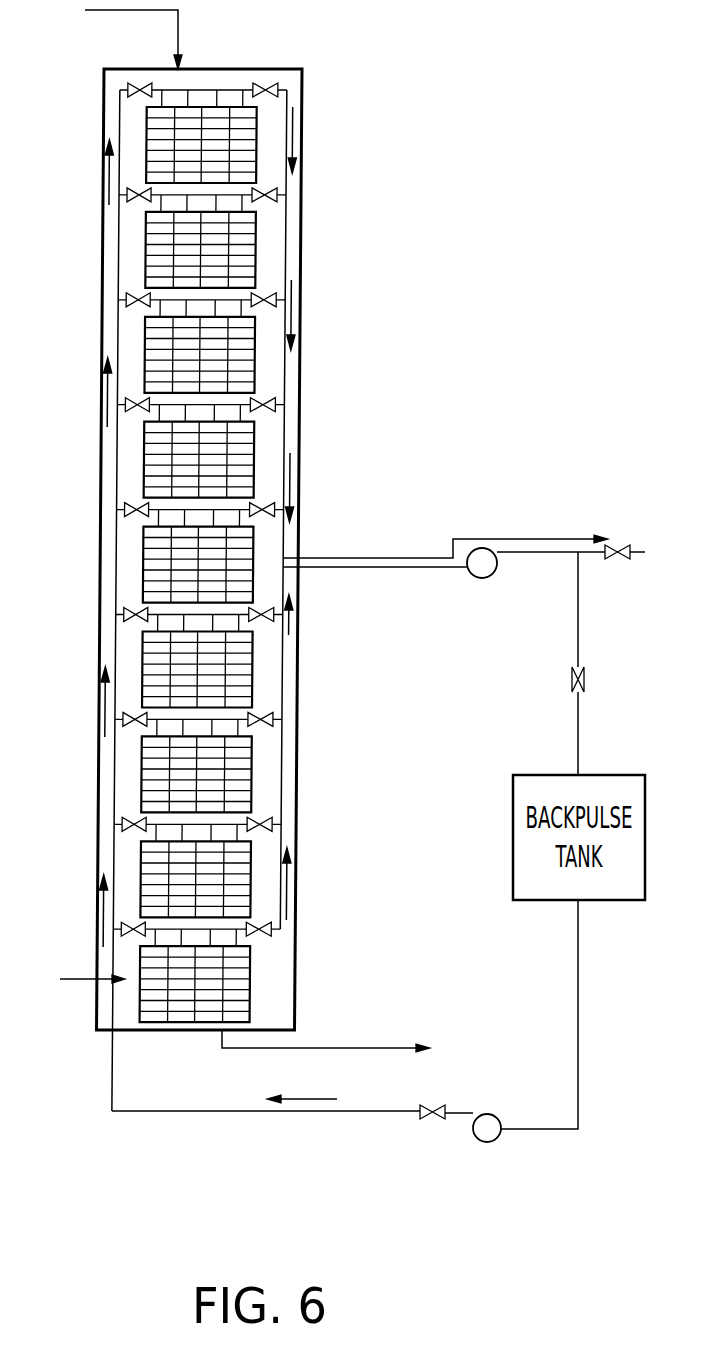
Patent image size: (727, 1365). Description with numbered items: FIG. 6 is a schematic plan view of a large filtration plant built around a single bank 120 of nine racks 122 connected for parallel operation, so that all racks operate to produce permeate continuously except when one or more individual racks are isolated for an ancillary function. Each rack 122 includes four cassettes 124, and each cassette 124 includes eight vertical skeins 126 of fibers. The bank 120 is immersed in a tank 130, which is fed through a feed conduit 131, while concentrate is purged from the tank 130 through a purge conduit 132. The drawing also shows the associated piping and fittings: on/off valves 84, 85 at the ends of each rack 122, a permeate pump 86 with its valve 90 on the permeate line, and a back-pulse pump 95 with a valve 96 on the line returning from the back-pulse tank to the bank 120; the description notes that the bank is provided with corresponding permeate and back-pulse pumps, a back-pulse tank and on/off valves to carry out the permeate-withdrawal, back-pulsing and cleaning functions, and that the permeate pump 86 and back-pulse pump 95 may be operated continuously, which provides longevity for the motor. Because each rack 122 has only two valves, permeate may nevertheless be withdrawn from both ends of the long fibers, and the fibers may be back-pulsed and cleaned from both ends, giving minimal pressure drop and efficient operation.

The inlet valve 84 is at (122, 824).
The outlet valve 85 is at (272, 827).
The pump 86 is at (467, 572).
The valve 90 is at (608, 549).
The backpulse pump 95 is at (487, 1114).
The backpulse valve 96 is at (437, 1120).
The bank 120 is at (288, 367).
The rack 122 is at (257, 250).
The cassette 124 is at (233, 733).
The vertical skein 126 is at (250, 786).
The tank 130 is at (302, 460).
The feed conduit 131 is at (179, 33).
The purge conduit 132 is at (358, 1047).